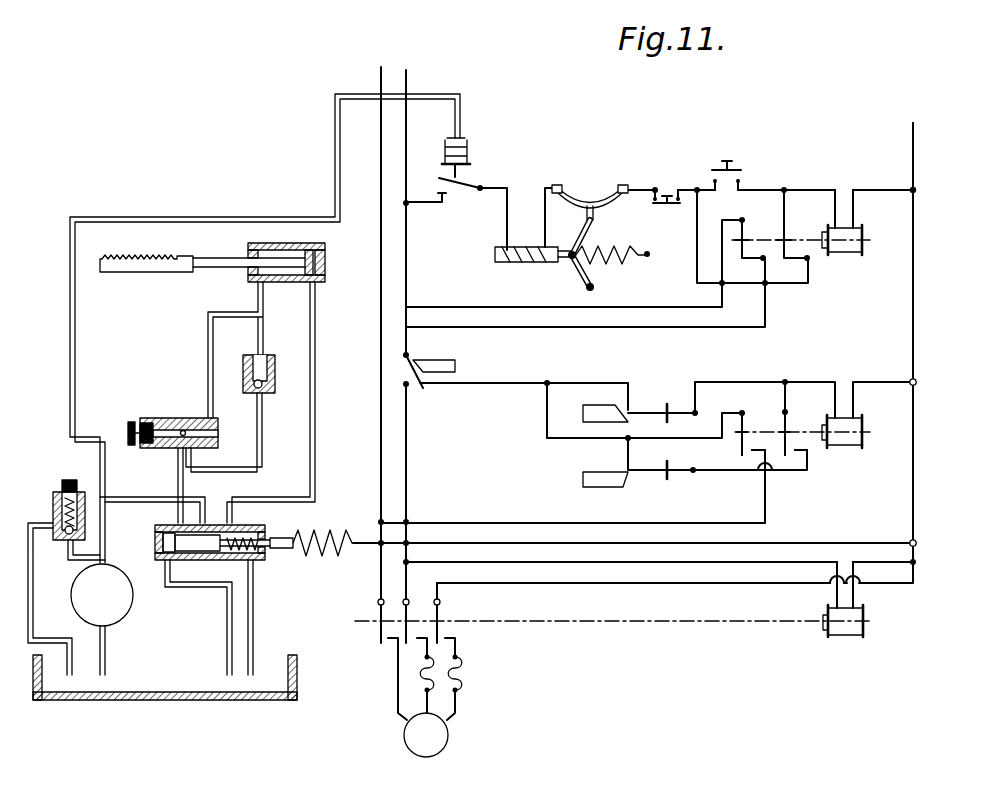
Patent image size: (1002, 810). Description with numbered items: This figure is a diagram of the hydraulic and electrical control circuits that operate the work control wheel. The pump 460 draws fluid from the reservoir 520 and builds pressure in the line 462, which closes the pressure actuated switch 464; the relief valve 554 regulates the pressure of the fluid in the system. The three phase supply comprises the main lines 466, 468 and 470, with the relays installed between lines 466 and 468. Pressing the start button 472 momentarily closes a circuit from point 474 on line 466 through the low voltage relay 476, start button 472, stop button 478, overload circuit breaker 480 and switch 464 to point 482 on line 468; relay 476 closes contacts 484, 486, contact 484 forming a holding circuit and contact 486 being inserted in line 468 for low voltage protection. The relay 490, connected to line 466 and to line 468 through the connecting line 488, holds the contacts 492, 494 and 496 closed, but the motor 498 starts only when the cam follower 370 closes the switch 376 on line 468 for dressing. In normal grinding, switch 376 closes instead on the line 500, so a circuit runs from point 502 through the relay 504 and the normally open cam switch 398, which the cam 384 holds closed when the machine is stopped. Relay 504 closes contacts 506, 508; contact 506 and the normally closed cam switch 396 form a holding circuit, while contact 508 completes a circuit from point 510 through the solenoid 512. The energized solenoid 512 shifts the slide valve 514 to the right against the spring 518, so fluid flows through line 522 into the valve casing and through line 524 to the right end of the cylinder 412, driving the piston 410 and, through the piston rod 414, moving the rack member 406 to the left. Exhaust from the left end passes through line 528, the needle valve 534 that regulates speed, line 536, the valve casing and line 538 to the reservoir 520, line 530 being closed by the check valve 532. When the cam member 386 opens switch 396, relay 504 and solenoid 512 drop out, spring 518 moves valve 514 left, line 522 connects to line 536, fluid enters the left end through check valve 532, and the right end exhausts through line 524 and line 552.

The cam follower 370 is at (425, 362).
The switch 376 is at (412, 367).
The cam 384 is at (611, 404).
The cam member 386 is at (607, 483).
The normally closed cam switch 396 is at (643, 473).
The normally open cam switch 398 is at (644, 411).
The rack member 406 is at (152, 270).
The piston 410 is at (297, 253).
The cylinder 412 is at (322, 264).
The piston rod 414 is at (232, 265).
The pump 460 is at (122, 606).
The line 462 is at (125, 217).
The pressure actuated switch 464 is at (467, 178).
The main line 466 is at (913, 135).
The main line 468 is at (406, 78).
The main line 470 is at (381, 72).
The start button 472 is at (730, 166).
The point 474 is at (913, 190).
The low voltage relay 476 is at (843, 254).
The stop button 478 is at (653, 207).
The overload circuit breaker 480 is at (575, 195).
The point 482 is at (408, 206).
The contact 484 is at (787, 237).
The contact 486 is at (746, 230).
The connecting line 488 is at (730, 565).
The relay 490 is at (843, 632).
The contact 492 is at (440, 618).
The contact 494 is at (408, 613).
The contact 496 is at (380, 613).
The motor 498 is at (441, 728).
The line 500 is at (485, 382).
The point 502 is at (916, 383).
The relay 504 is at (853, 447).
The contact 506 is at (788, 420).
The contact 508 is at (747, 422).
The point 510 is at (916, 545).
The solenoid 512 is at (331, 533).
The slide valve 514 is at (203, 547).
The spring 518 is at (249, 526).
The reservoir 520 is at (165, 677).
The line 522 is at (121, 496).
The line 524 is at (315, 462).
The line 528 is at (207, 340).
The line 530 is at (258, 349).
The check valve 532 is at (263, 391).
The needle valve 534 is at (177, 418).
The line 536 is at (185, 479).
The line 538 is at (227, 626).
The line 552 is at (254, 619).
The valve 554 is at (53, 521).